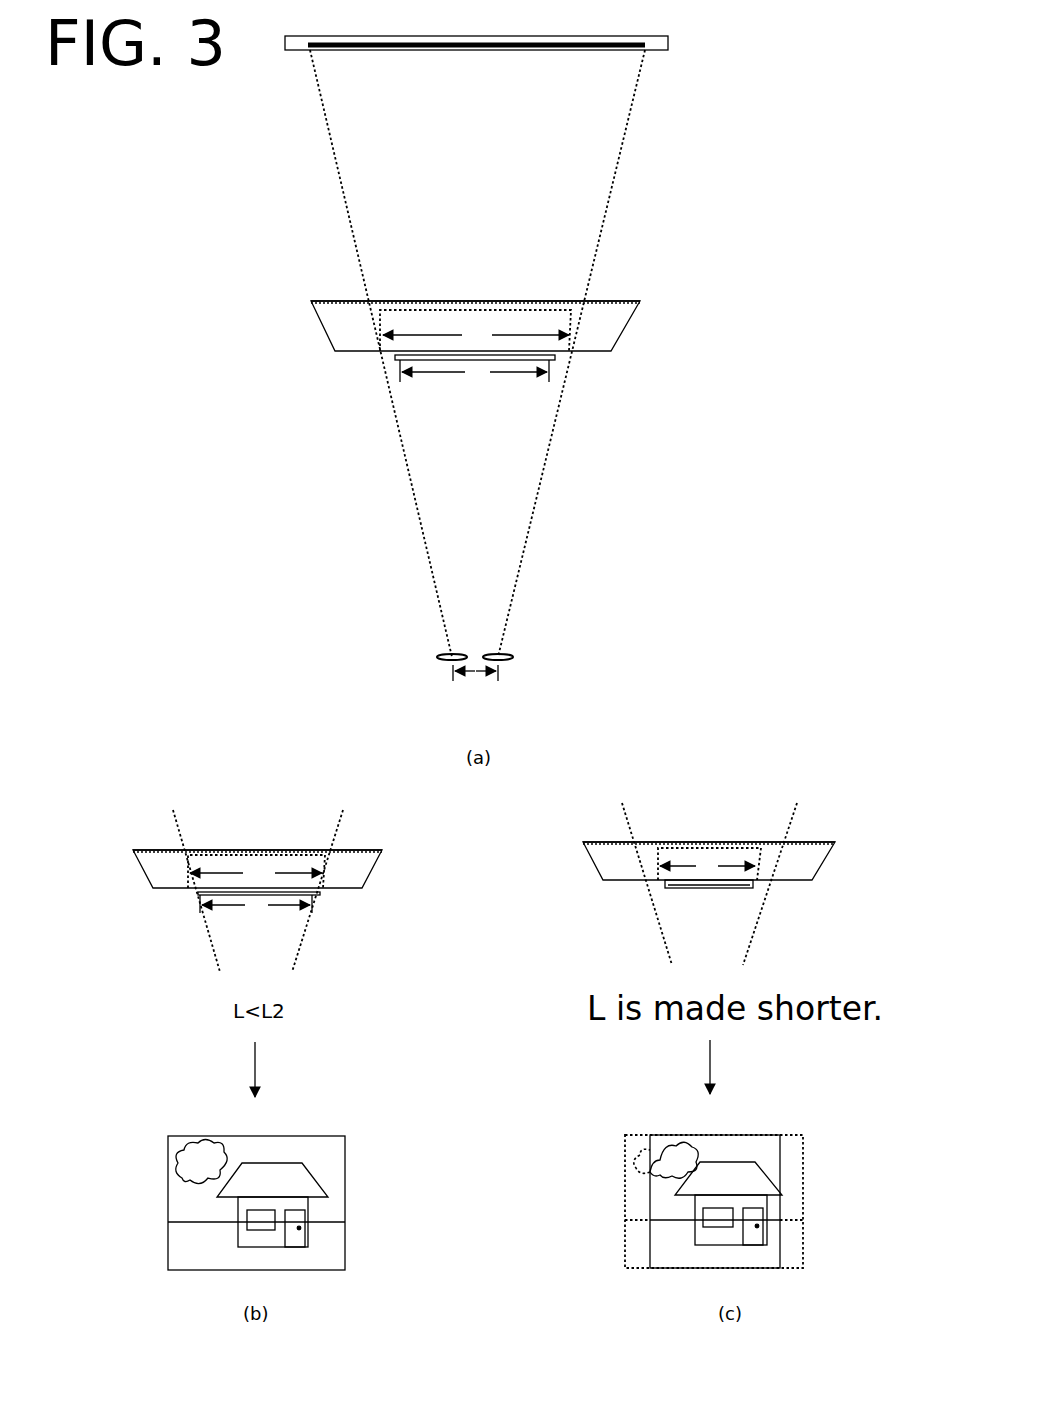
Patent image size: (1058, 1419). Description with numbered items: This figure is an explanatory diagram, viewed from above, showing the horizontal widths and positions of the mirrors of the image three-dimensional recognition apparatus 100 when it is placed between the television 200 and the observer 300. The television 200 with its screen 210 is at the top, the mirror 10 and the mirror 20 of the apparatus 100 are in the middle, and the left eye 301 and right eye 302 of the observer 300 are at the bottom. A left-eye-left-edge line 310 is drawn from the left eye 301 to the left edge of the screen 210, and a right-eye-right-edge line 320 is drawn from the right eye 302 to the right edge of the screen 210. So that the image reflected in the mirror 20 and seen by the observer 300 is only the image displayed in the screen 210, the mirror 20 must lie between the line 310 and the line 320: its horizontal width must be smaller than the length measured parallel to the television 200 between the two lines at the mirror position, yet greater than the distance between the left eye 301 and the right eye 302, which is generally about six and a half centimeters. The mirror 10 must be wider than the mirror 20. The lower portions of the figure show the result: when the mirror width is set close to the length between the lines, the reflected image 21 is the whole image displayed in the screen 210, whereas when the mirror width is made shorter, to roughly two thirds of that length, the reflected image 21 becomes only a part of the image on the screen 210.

The television 200 is at (719, 20).
The screen 210 is at (492, 48).
The left-eye-left-edge line 310 is at (342, 191).
The right-eye-right-edge line 320 is at (610, 191).
The image three-dimensional recognition apparatus 100 is at (660, 276).
The mirror 10 is at (344, 300).
The mirror 20 is at (395, 356).
The observer 300 is at (490, 658).
The left eye 301 is at (448, 655).
The right eye 302 is at (496, 655).
The image reflected in the mirror 21 is at (345, 1205).